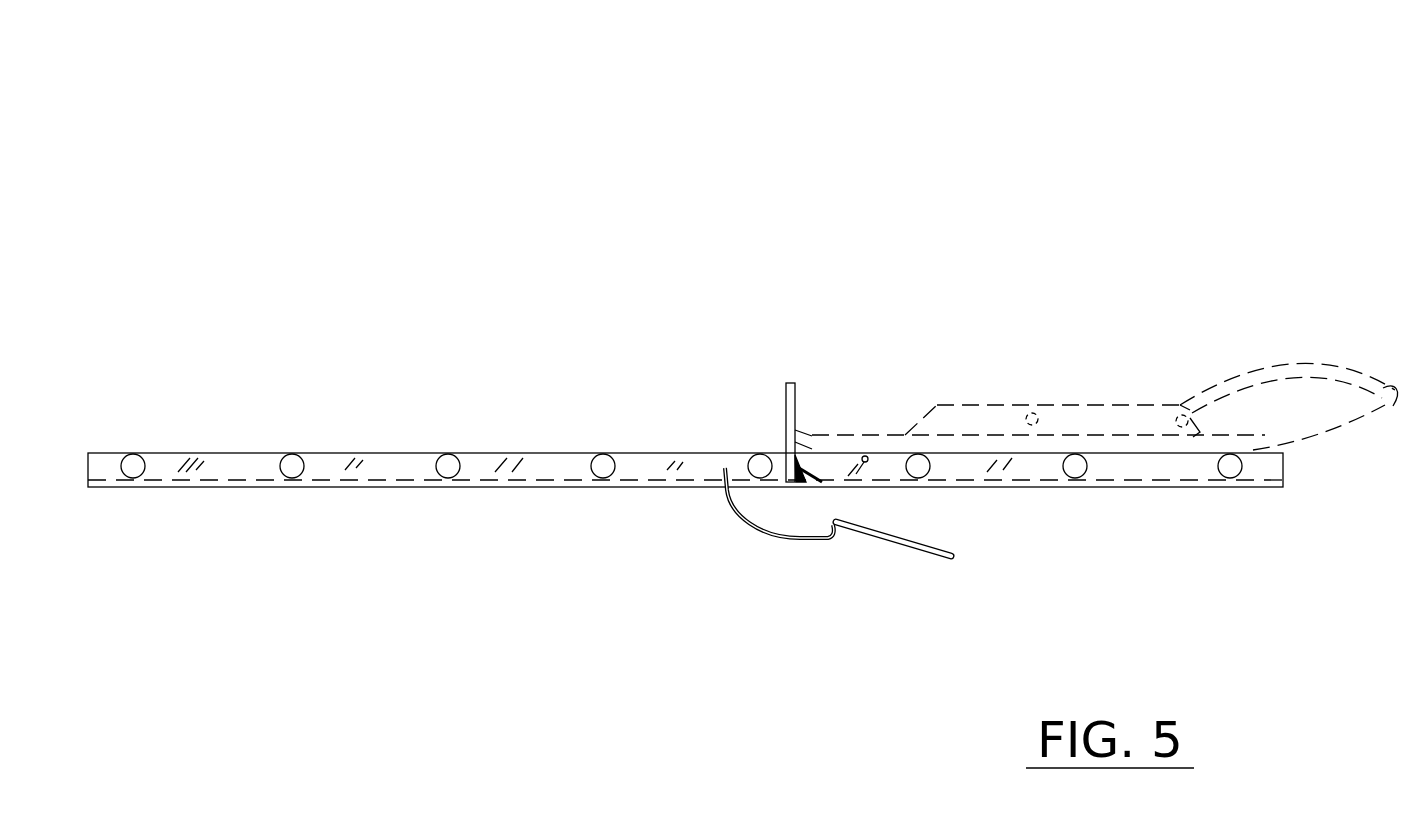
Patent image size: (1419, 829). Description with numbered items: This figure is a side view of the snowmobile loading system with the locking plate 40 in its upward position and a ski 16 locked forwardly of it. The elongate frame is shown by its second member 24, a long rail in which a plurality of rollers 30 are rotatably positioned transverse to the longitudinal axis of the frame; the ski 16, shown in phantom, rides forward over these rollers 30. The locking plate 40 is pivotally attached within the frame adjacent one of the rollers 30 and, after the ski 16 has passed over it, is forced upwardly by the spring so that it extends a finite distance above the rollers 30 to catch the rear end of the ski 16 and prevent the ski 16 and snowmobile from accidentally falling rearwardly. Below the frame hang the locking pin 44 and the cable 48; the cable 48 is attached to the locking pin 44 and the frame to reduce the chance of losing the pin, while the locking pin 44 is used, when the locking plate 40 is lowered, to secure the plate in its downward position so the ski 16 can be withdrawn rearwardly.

The ski 16 is at (1108, 405).
The second member 24 is at (243, 453).
The rollers 30 is at (433, 460).
The locking plate 40 is at (792, 405).
The locking pin 44 is at (890, 545).
The cable 48 is at (762, 528).